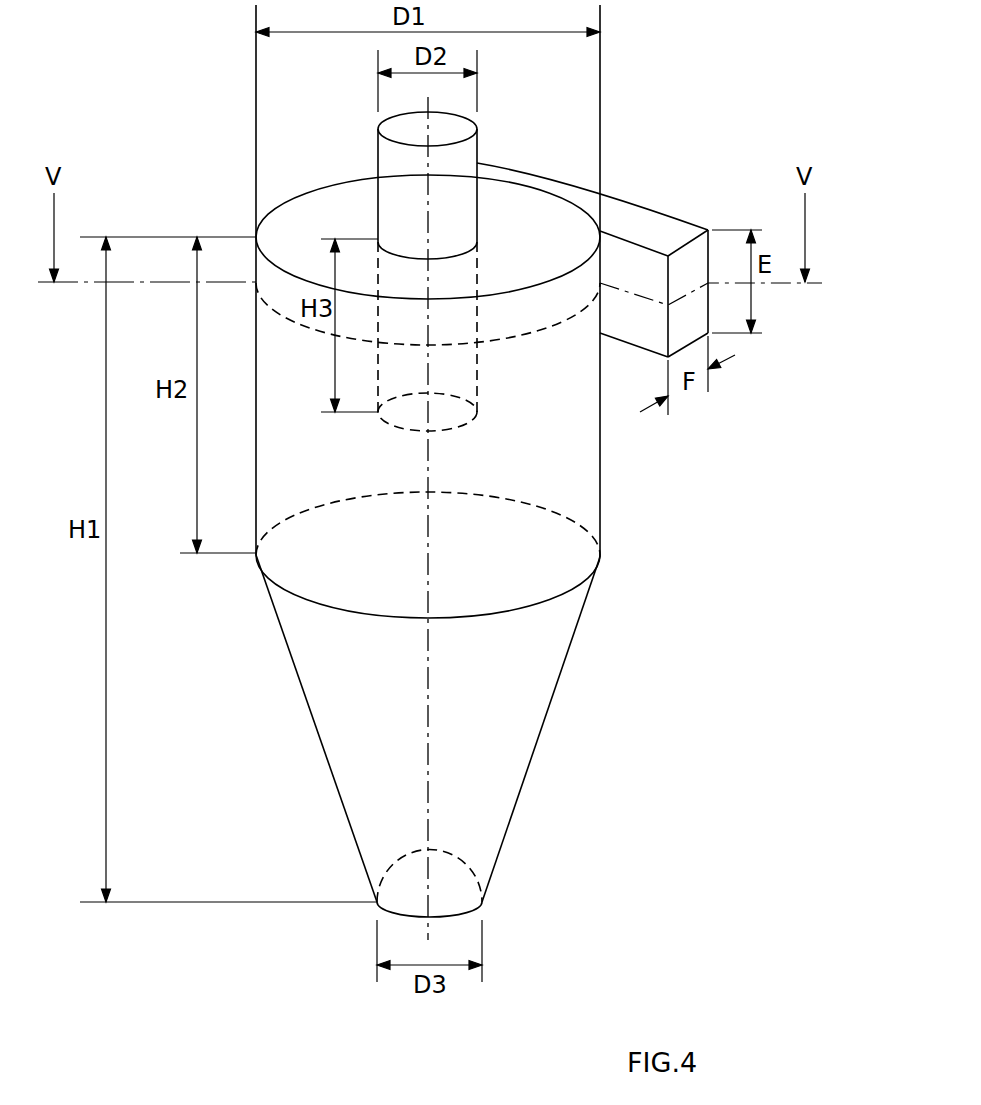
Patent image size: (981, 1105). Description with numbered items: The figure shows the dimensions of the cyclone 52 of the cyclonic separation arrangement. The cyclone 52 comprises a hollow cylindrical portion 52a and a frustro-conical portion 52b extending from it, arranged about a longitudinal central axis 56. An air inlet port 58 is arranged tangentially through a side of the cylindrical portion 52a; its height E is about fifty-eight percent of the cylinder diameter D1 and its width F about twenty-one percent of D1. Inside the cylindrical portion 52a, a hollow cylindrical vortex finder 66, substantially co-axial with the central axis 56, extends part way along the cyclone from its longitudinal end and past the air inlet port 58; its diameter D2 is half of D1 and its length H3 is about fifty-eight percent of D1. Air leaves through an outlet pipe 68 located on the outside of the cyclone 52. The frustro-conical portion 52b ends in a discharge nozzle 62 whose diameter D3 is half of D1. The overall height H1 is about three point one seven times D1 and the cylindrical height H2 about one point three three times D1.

The cyclone 52 is at (617, 536).
The hollow cylindrical portion 52a is at (600, 473).
The frustro-conical portion 52b is at (540, 744).
The longitudinal central axis 56 is at (429, 785).
The air inlet port 58 is at (643, 220).
The discharge nozzle 62 is at (482, 902).
The vortex finder 66 is at (478, 391).
The outlet pipe 68 is at (478, 154).